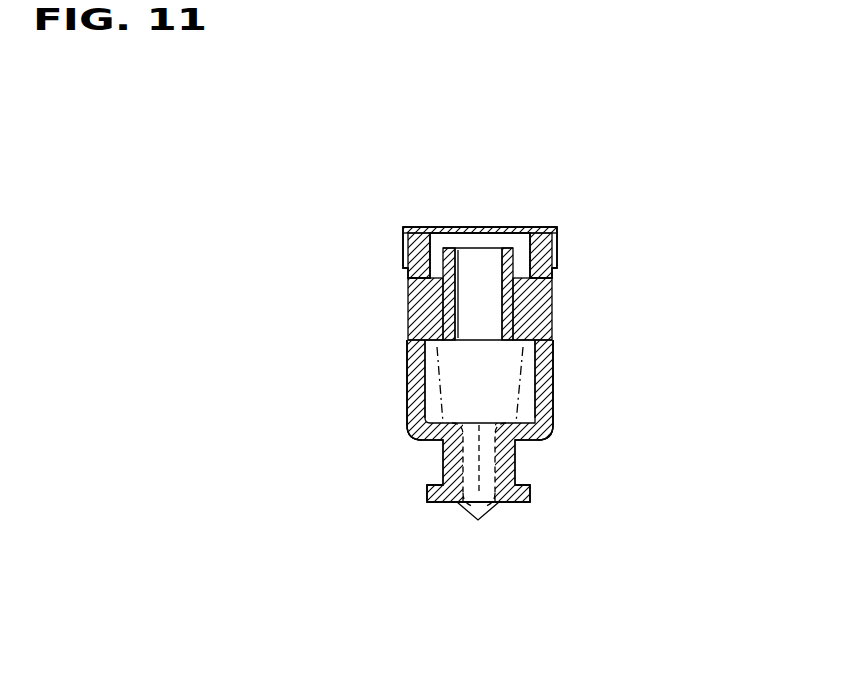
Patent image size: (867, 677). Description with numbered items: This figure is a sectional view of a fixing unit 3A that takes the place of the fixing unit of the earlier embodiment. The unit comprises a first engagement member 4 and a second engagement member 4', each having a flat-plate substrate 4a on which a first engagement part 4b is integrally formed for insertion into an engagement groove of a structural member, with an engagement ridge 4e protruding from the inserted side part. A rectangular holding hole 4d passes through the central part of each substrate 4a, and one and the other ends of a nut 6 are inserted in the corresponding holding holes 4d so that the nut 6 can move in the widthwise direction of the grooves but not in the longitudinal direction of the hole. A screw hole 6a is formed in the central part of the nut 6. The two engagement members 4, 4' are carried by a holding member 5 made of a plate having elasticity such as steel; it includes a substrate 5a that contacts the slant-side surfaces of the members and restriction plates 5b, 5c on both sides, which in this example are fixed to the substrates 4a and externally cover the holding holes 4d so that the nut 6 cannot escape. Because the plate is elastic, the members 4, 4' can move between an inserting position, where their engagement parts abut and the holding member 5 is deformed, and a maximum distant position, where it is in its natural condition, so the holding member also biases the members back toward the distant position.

The fixing unit 3A is at (531, 222).
The first engagement member 4 is at (433, 421).
The second engagement member 4' is at (526, 421).
The substrate 4a is at (410, 355).
The first engagement part 4b is at (478, 520).
The holding hole 4d is at (413, 287).
The engagement ridge 4e is at (428, 485).
The holding member 5 is at (437, 222).
The substrate 5a is at (493, 227).
The restriction plate 5b is at (402, 245).
The restriction plate 5c is at (555, 243).
The nut 6 is at (555, 330).
The screw hole 6a is at (505, 288).